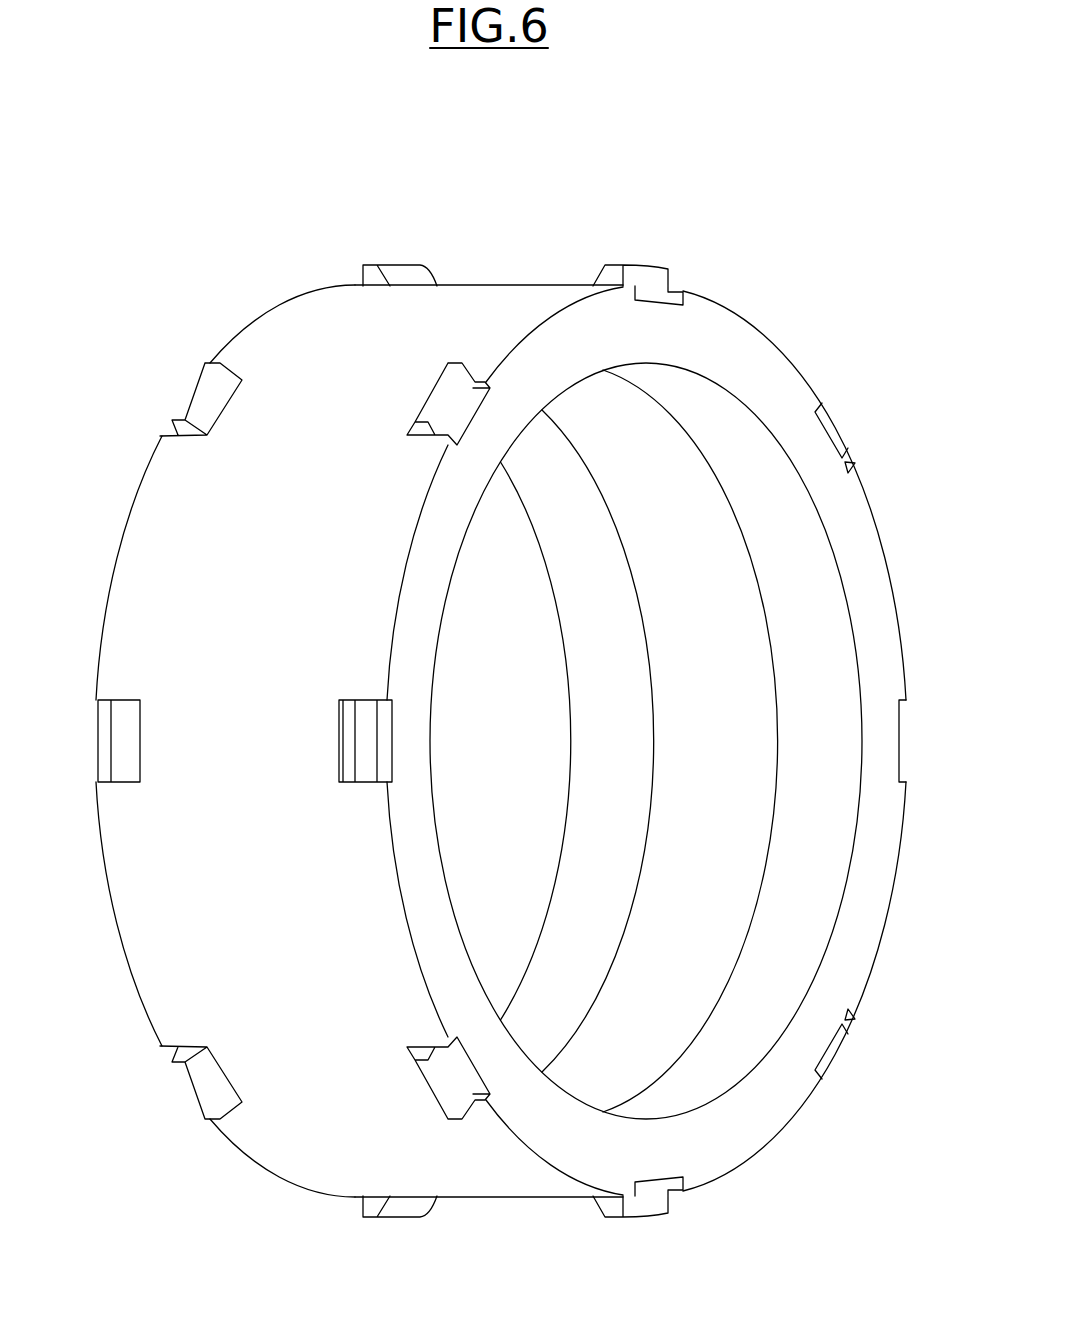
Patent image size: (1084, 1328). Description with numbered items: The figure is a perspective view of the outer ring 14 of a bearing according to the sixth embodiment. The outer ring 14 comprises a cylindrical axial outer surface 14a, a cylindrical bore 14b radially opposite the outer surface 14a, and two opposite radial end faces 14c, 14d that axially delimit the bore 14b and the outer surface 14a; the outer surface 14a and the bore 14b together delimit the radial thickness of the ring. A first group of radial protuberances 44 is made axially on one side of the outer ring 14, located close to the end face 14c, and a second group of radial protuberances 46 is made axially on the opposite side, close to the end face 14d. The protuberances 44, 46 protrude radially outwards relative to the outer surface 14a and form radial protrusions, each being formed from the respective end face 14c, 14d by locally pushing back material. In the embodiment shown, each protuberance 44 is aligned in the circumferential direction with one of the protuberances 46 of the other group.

The outer ring 14 is at (500, 723).
The cylindrical axial outer surface 14a is at (470, 303).
The cylindrical bore 14b is at (787, 540).
The radial end face 14c is at (118, 556).
The radial end face 14d is at (843, 980).
The radial protuberances of first group 44 is at (404, 265).
The radial protuberances of second group 46 is at (645, 268).